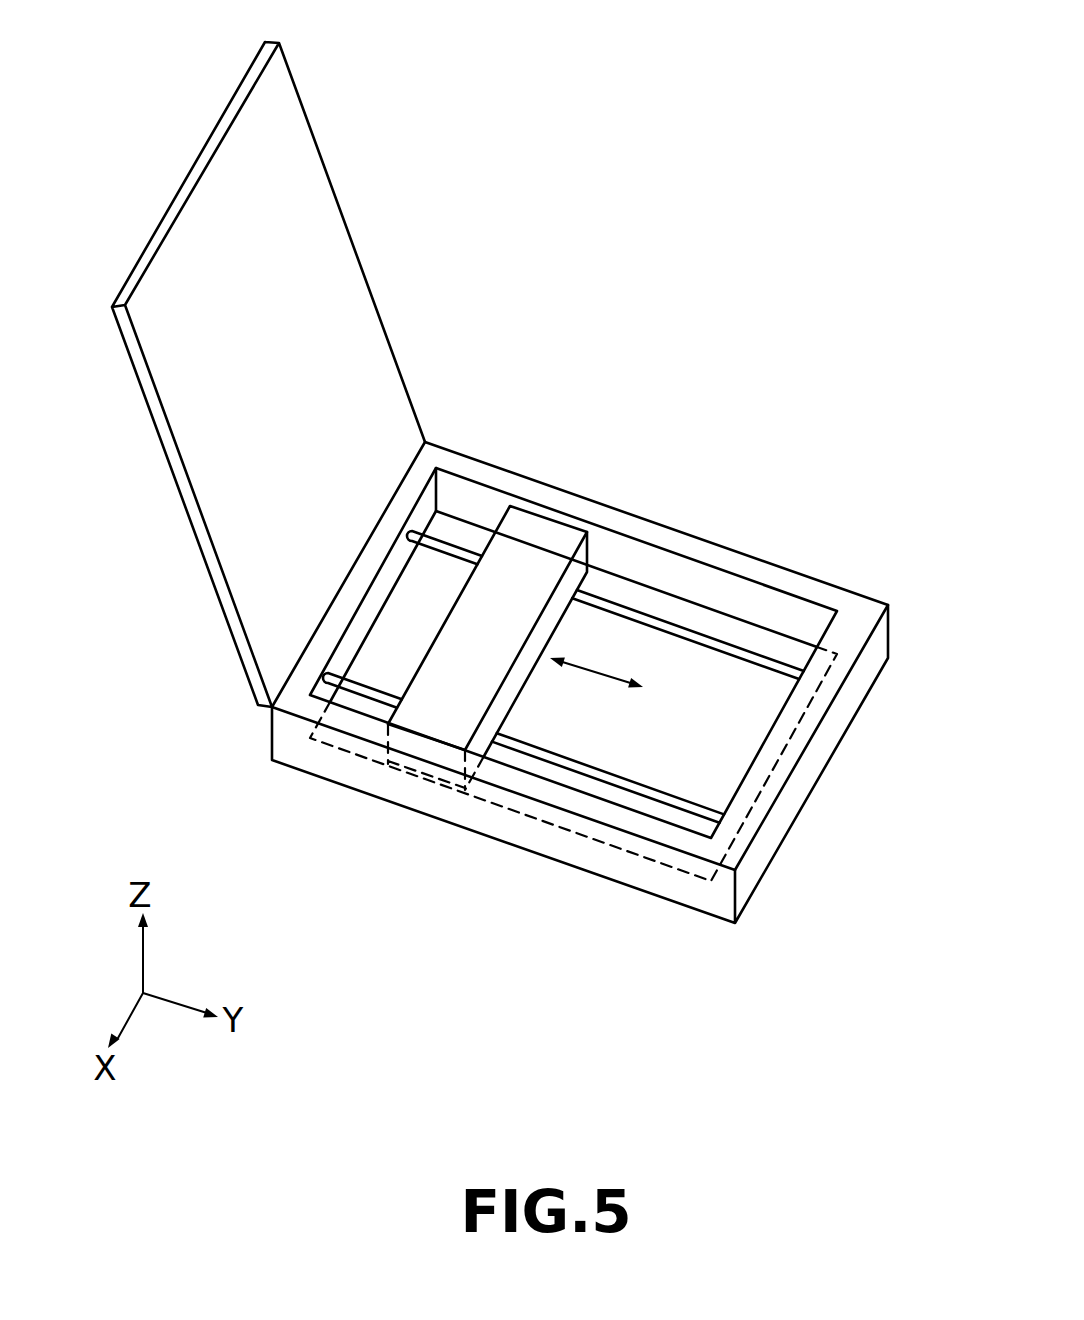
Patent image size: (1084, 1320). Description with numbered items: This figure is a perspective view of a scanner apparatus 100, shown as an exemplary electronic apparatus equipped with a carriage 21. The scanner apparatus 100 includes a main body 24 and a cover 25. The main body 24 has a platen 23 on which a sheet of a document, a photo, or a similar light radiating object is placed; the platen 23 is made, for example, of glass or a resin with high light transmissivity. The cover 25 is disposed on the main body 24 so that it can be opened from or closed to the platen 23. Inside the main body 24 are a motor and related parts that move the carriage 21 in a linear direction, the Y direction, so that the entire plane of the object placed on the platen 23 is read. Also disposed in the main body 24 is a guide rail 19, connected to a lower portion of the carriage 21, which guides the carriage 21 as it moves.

The scanner apparatus 100 is at (592, 153).
The cover 25 is at (312, 190).
The main body 24 is at (673, 535).
The platen 23 is at (730, 733).
The guide rail 19 is at (750, 656).
The carriage 21 is at (538, 542).